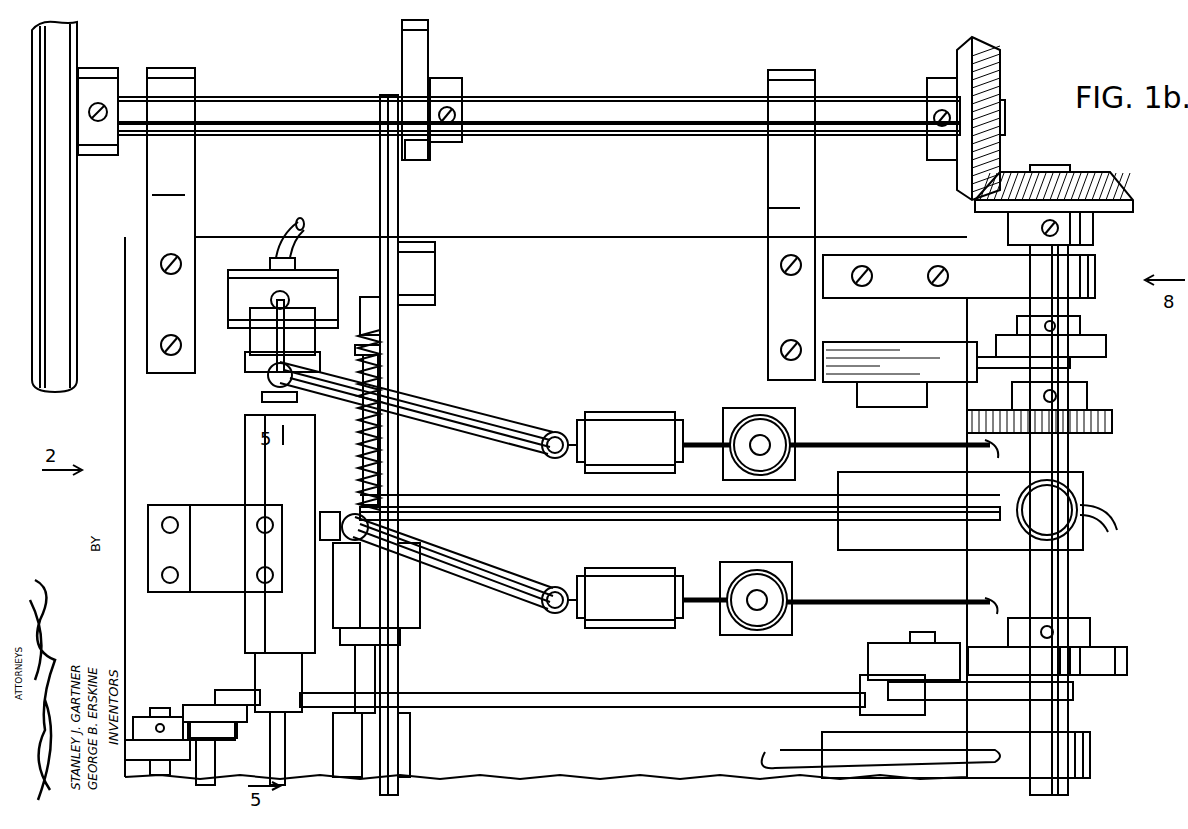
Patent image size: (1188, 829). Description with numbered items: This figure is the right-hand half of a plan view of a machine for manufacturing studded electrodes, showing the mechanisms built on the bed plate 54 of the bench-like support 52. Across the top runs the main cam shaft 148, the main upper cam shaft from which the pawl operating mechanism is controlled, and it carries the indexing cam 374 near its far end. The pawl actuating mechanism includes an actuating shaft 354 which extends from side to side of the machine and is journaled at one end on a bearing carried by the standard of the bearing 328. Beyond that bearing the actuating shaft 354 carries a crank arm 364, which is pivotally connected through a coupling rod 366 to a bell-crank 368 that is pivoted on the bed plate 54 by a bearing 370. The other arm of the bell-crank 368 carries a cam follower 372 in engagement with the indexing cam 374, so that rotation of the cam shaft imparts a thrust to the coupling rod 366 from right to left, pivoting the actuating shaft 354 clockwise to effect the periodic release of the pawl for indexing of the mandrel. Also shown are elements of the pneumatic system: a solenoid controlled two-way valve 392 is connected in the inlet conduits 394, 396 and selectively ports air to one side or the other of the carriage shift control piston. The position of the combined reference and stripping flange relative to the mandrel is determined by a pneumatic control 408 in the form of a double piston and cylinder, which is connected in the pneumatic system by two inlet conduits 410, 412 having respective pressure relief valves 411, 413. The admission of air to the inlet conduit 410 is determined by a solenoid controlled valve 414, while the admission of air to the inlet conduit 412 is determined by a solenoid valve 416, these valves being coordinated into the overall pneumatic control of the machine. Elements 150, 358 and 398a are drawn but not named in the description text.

The bench-like support 52 is at (635, 249).
The bed plate 54 is at (686, 240).
The main cam shaft 148 is at (1068, 582).
The bearing plate 150 is at (1095, 268).
The bearing 328 is at (140, 716).
The actuating shaft 354 is at (200, 784).
The collar 358 is at (228, 740).
The crank arm 364 is at (200, 704).
The coupling rod 366 is at (575, 705).
The bell-crank 368 is at (1005, 700).
The bearing 370 is at (868, 652).
The cam follower 372 is at (1035, 665).
The indexing cam 374 is at (1118, 645).
The solenoid controlled two-way valve 392 is at (240, 268).
The inlet conduit 394 is at (296, 222).
The inlet conduit 396 is at (292, 306).
The collar 398a is at (252, 380).
The pneumatic control 408 is at (245, 482).
The inlet conduit 410 is at (465, 570).
The pressure relief valve 411 is at (632, 628).
The inlet conduit 412 is at (440, 408).
The pressure relief valve 413 is at (632, 412).
The solenoid controlled valve 414 is at (750, 625).
The solenoid valve 416 is at (752, 414).